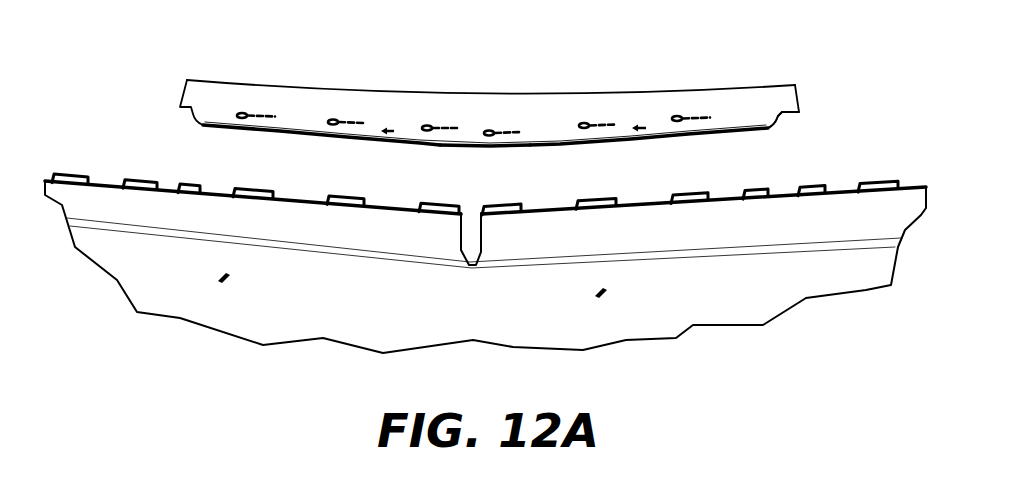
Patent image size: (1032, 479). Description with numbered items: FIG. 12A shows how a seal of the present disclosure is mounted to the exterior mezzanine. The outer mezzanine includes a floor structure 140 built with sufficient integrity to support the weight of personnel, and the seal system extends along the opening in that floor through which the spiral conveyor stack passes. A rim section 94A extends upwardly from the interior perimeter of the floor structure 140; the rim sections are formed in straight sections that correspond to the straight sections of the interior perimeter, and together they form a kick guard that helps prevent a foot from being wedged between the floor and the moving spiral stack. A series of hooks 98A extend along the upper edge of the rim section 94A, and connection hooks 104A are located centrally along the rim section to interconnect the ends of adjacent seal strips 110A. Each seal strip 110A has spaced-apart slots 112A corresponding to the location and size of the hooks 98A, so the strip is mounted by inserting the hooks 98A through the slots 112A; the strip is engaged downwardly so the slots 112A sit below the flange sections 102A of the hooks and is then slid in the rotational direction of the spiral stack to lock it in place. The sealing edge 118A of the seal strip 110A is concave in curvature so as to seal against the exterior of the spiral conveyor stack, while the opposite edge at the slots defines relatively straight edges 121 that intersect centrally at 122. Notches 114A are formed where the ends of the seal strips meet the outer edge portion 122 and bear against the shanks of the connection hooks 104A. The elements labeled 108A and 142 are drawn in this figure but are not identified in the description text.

The rim section 94A is at (105, 200).
The hook 98A is at (879, 180).
The flange section 102A is at (72, 176).
The connection hook 104A is at (157, 183).
The tab 108A is at (191, 190).
The seal strip 110A is at (604, 107).
The slot 112A is at (442, 124).
The notch 114A is at (784, 116).
The sealing edge 118A is at (243, 82).
The straight edge 121 is at (357, 139).
The outer edge portion 122 is at (484, 141).
The floor structure 140 is at (182, 288).
The notch 142 is at (472, 258).